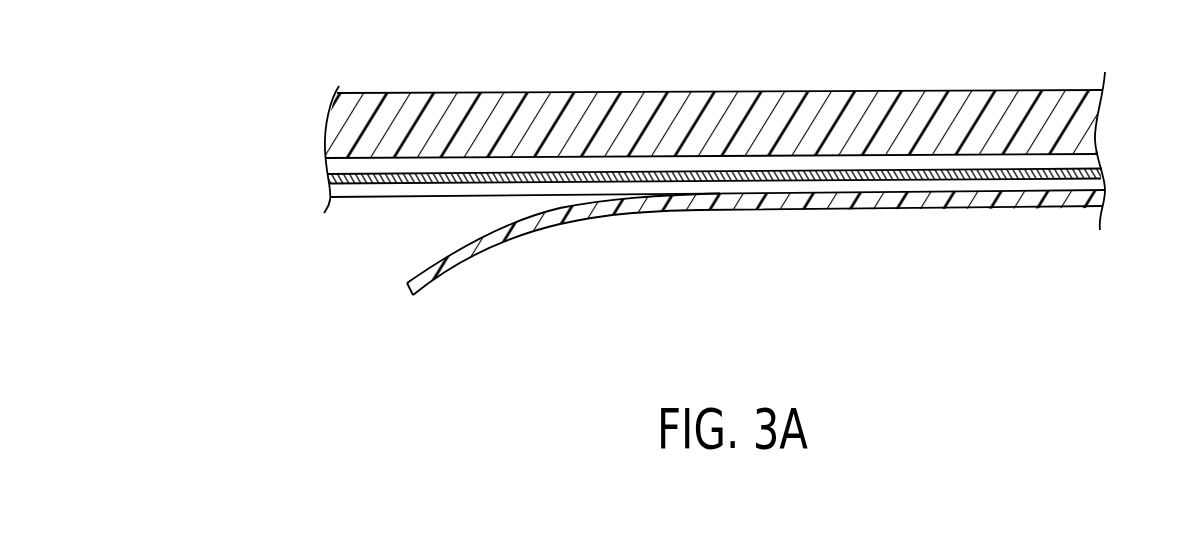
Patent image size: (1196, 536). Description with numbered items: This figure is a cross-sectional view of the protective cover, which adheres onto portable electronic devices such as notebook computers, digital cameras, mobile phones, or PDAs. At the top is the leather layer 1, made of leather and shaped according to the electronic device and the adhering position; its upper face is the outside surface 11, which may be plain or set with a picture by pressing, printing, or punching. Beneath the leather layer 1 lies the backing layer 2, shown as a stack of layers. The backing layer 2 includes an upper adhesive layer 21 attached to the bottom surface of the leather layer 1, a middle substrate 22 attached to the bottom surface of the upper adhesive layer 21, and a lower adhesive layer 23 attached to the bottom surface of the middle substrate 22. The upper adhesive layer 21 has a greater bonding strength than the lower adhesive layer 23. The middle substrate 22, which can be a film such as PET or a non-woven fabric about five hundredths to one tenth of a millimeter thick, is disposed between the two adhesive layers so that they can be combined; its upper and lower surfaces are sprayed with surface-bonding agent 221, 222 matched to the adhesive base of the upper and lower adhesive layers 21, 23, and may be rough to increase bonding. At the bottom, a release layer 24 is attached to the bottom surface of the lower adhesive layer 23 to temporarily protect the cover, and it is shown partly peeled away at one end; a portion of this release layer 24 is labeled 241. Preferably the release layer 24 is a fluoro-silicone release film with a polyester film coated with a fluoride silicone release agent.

The leather layer 1 is at (696, 158).
The outside surface 11 is at (668, 102).
The backing layer 2 is at (696, 220).
The upper adhesive layer 21 is at (326, 171).
The middle substrate 22 is at (718, 176).
The surface-bonding agent 221 is at (1094, 164).
The surface-bonding agent 222 is at (1092, 184).
The lower adhesive layer 23 is at (347, 190).
The release layer 24 is at (677, 242).
The attached portion of protective film 241 is at (1068, 193).